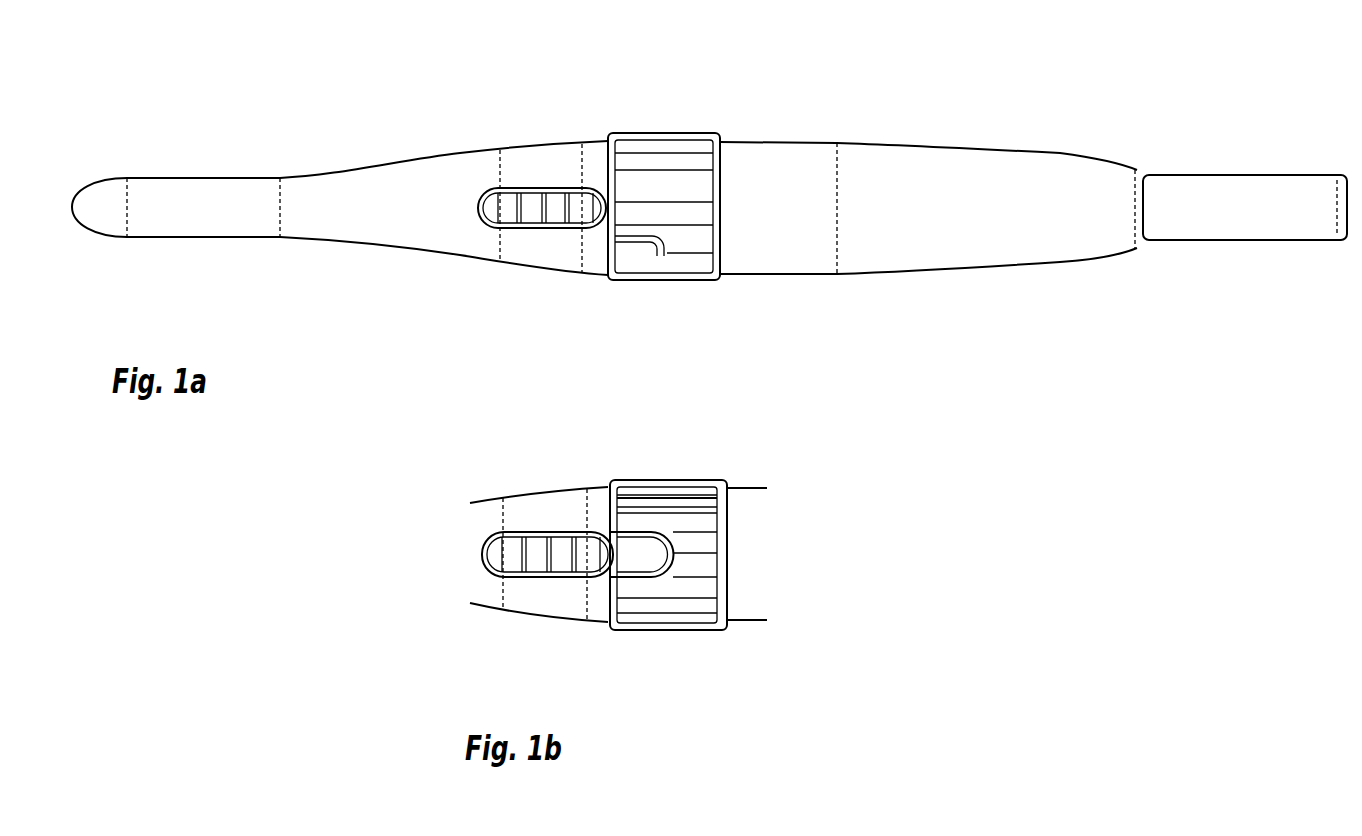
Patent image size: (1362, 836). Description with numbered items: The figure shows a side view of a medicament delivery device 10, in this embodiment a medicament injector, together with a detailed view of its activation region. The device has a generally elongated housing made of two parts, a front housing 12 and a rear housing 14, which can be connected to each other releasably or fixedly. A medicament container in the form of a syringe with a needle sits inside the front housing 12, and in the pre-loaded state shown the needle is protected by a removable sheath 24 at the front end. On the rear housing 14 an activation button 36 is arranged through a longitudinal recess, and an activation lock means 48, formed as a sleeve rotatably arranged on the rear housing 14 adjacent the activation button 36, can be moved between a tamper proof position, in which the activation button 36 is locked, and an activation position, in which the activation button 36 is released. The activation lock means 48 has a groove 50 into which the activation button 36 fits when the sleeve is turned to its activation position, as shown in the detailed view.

In FIG. 1a, the medicament delivery device 10 is at (913, 330).
In FIG. 1a, the front housing 12 is at (956, 183).
In FIG. 1a, the rear housing 14 is at (283, 195).
In FIG. 1a, the removable sheath 24 is at (1245, 207).
In FIG. 1a, the activation button 36 is at (545, 220).
In FIG. 1b, the activation button 36 is at (508, 560).
In FIG. 1a, the activation lock means 48 is at (652, 218).
In FIG. 1a, the groove 50 is at (649, 253).
In FIG. 1b, the groove 50 is at (652, 550).